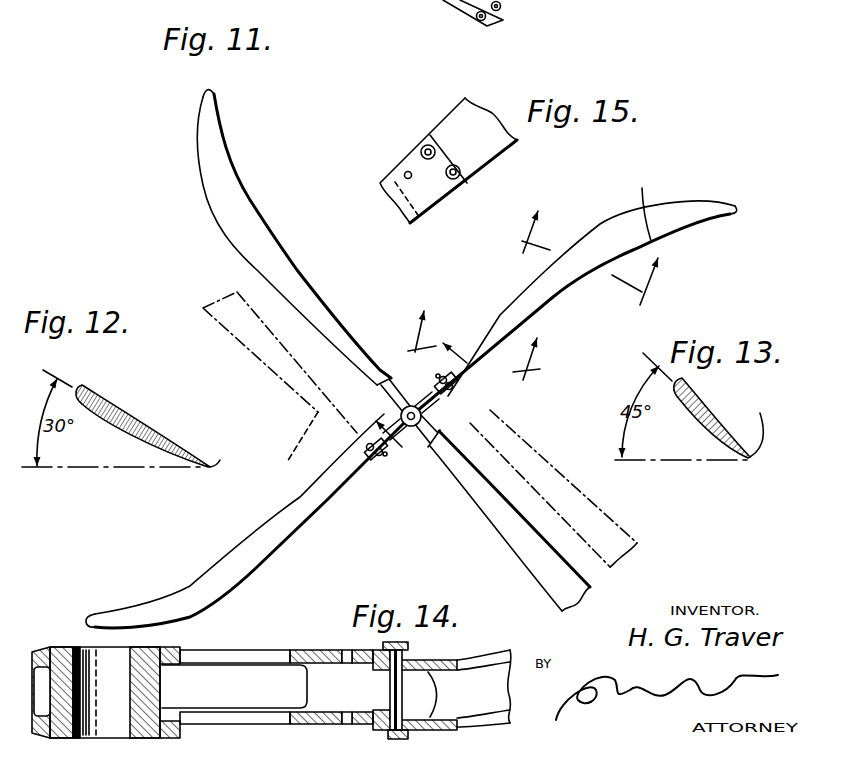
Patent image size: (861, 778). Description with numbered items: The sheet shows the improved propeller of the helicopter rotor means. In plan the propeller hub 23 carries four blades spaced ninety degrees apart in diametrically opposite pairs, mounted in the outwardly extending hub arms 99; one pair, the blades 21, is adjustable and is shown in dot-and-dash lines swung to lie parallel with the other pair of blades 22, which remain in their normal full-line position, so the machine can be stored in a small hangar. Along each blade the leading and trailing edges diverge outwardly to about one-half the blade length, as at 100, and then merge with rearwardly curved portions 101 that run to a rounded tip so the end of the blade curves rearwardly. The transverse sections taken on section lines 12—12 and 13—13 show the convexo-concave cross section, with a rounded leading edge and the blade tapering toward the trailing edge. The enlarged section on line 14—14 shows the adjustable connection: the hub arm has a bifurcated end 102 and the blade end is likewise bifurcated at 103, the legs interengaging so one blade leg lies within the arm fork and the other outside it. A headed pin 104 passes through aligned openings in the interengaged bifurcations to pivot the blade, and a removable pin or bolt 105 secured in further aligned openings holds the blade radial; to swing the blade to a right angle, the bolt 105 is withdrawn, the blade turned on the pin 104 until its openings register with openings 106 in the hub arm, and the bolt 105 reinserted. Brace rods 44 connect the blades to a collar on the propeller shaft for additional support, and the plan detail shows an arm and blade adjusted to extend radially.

In FIG. 11, the section line 12— 12 is at (602, 252).
In FIG. 11, the section line 13— 13 is at (484, 335).
In FIG. 11, the section line 14— 14 is at (420, 385).
In FIG. 11, the propeller blades 21 is at (561, 296).
In FIG. 15, the propeller blades 21 is at (488, 147).
In FIG. 12, the propeller blades 21 is at (135, 420).
In FIG. 13, the propeller blades 21 is at (703, 430).
In FIG. 14, the propeller blades 21 is at (477, 655).
In FIG. 11, the blade 22 is at (289, 258).
In FIG. 11, the propeller hub 23 is at (410, 406).
In FIG. 14, the propeller hub 23 is at (62, 646).
In FIG. 14, the brace rods 44 is at (305, 735).
In FIG. 11, the hub arms 99 is at (385, 391).
In FIG. 15, the hub arms 99 is at (412, 224).
In FIG. 14, the hub arms 99 is at (250, 650).
In FIG. 11, the diverging edge portion 100 is at (502, 345).
In FIG. 13, the diverging edge portion 100 is at (688, 379).
In FIG. 11, the rearwardly curved portions 101 is at (628, 208).
In FIG. 12, the rearwardly curved portions 101 is at (82, 387).
In FIG. 14, the bifurcated end of hub arm 102 is at (370, 670).
In FIG. 14, the bifurcated end of blade 103 is at (436, 686).
In FIG. 11, the headed pin 104 is at (452, 380).
In FIG. 15, the headed pin 104 is at (424, 147).
In FIG. 14, the headed pin 104 is at (398, 646).
In FIG. 11, the pin or bolt 105 is at (452, 388).
In FIG. 15, the pin or bolt 105 is at (458, 180).
In FIG. 11, the openings in hub arms 106 is at (439, 374).
In FIG. 15, the openings in hub arms 106 is at (404, 174).
In FIG. 14, the openings in hub arms 106 is at (345, 663).